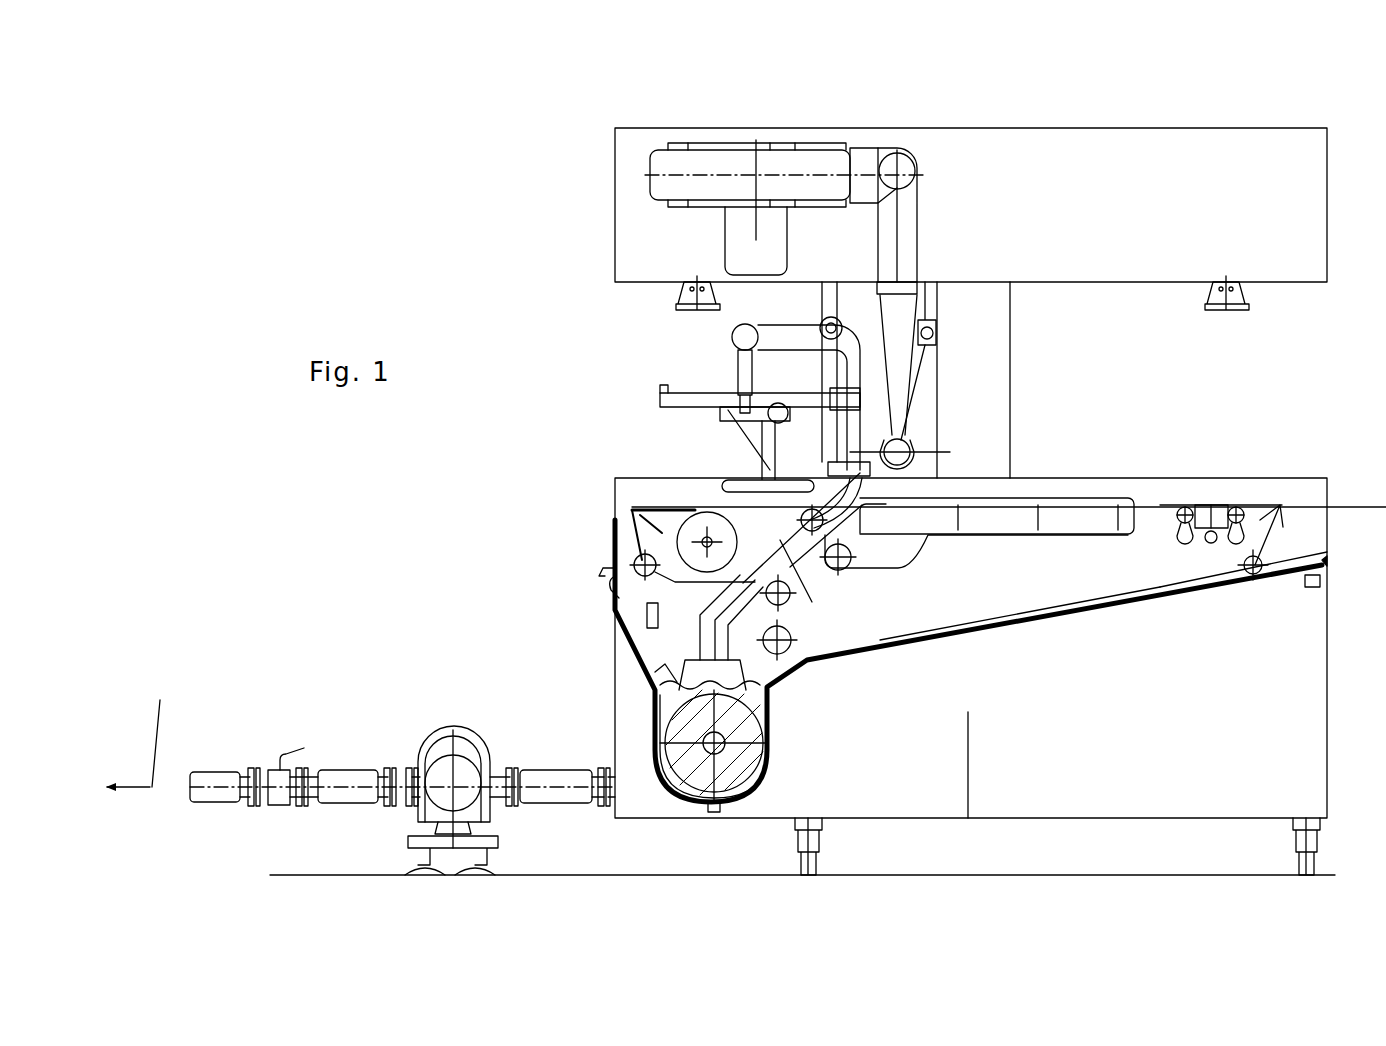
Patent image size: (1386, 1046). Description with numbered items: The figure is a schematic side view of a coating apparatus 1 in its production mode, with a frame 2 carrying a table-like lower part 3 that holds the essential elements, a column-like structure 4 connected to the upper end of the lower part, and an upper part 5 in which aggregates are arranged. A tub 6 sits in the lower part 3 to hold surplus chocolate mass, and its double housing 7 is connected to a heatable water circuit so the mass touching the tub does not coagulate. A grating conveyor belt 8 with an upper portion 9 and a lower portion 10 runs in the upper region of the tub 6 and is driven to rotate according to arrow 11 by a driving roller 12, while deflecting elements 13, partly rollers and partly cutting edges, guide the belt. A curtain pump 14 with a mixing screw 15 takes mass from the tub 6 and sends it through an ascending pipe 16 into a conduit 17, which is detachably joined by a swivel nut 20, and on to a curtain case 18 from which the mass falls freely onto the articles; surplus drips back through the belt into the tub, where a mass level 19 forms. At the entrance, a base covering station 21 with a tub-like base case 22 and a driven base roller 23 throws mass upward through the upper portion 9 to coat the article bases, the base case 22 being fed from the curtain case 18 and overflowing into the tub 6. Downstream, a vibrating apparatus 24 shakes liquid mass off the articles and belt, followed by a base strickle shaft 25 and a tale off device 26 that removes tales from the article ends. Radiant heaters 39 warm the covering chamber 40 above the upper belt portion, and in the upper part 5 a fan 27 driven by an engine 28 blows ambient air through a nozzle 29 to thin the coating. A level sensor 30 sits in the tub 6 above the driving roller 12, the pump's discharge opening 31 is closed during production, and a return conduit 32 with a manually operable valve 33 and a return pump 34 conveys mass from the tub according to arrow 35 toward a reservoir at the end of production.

The coating apparatus 1 is at (562, 163).
The frame 2 is at (1329, 700).
The lower part 3 is at (1268, 745).
The column-like structure 4 is at (980, 352).
The upper part 5 is at (1038, 258).
The tub 6 is at (1215, 598).
The double housing 7 is at (614, 628).
The grating conveyor belt 8 is at (632, 482).
The upper portion 9 is at (665, 455).
The lower portion 10 is at (1000, 628).
The arrow 11 is at (1185, 497).
The driving roller 12 is at (790, 660).
The deflecting elements 13 is at (635, 516).
The curtain pump 14 is at (770, 752).
The mixing screw 15 is at (768, 774).
The ascending pipe 16 is at (700, 635).
The conduit 17 is at (778, 305).
The curtain case 18 is at (700, 400).
The mass level 19 is at (665, 680).
The swivel nut 20 is at (870, 472).
The base covering station 21 is at (748, 530).
The base case 22 is at (785, 560).
The base roller 23 is at (700, 530).
The vibrating apparatus 24 is at (1072, 540).
The base strickle shaft 25 is at (1210, 503).
The tale off device 26 is at (1281, 505).
The fan 27 is at (812, 144).
The engine 28 is at (740, 222).
The nozzle 29 is at (905, 420).
The level sensor 30 is at (650, 615).
The discharge opening 31 is at (714, 812).
The return conduit 32 is at (228, 778).
The valve 33 is at (276, 797).
The return pump 34 is at (446, 733).
The arrow 35 is at (146, 726).
The radiant heaters 39 is at (680, 305).
The covering chamber 40 is at (715, 358).